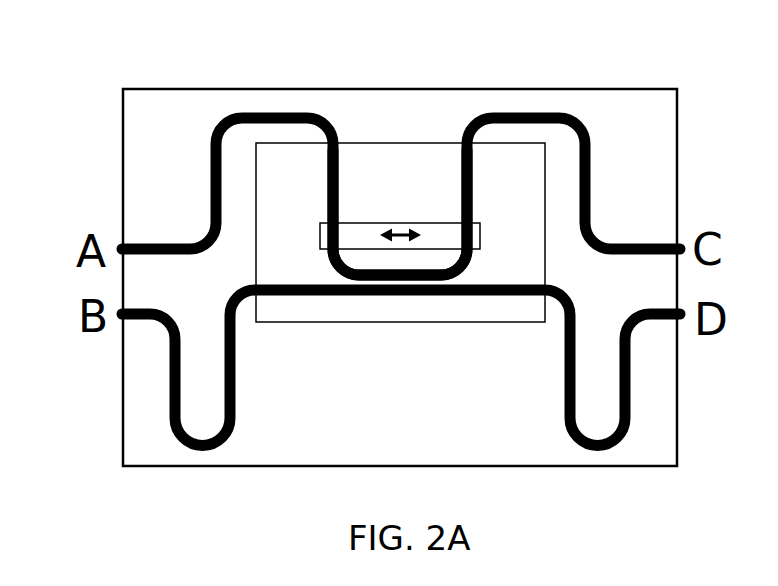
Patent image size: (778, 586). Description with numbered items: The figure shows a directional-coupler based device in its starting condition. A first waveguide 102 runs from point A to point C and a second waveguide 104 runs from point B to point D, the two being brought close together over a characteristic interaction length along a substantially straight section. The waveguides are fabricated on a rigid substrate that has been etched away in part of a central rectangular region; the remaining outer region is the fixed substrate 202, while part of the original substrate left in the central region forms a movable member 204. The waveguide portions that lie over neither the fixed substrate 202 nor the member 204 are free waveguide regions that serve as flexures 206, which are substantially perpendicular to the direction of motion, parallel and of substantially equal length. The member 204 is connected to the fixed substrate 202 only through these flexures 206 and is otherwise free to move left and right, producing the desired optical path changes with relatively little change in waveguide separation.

The first waveguide 102 is at (214, 170).
The second waveguide 104 is at (172, 412).
The fixed substrate 202 is at (425, 413).
The member 204 is at (405, 224).
The flexures 206 is at (327, 177).